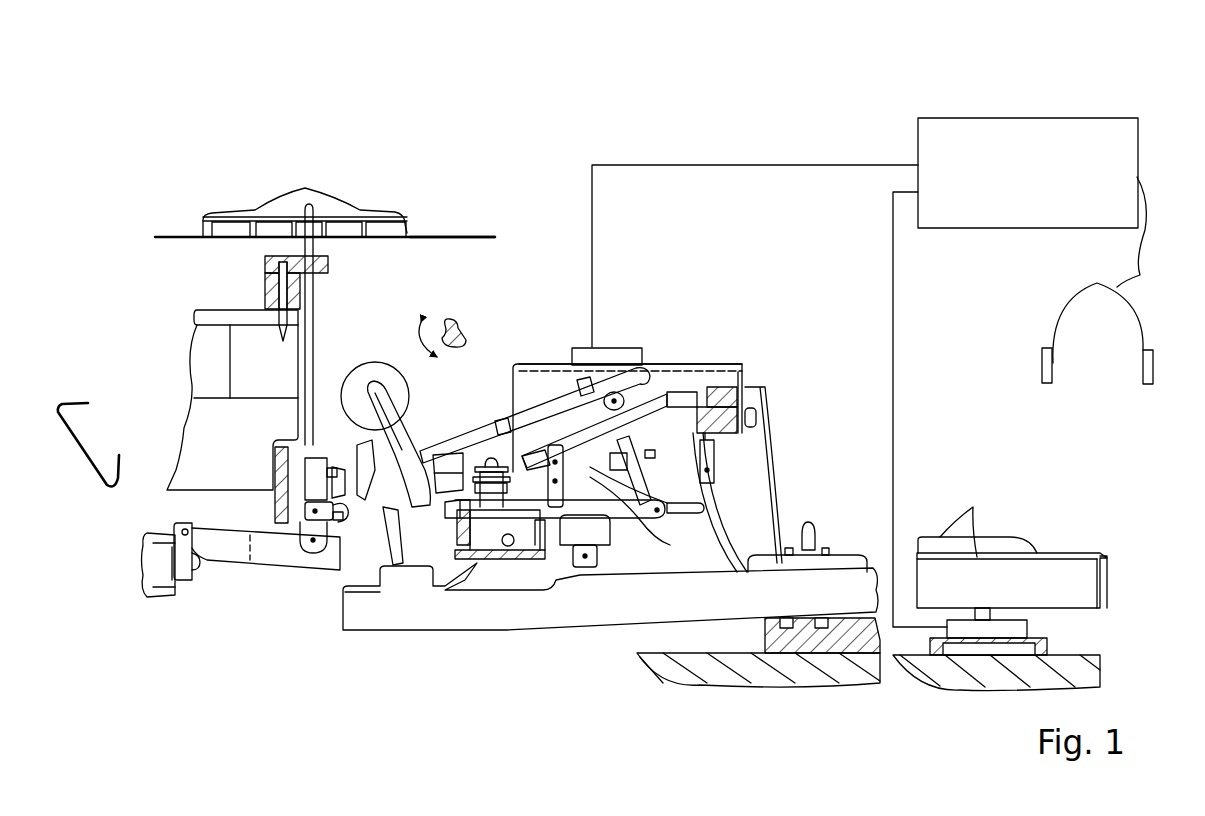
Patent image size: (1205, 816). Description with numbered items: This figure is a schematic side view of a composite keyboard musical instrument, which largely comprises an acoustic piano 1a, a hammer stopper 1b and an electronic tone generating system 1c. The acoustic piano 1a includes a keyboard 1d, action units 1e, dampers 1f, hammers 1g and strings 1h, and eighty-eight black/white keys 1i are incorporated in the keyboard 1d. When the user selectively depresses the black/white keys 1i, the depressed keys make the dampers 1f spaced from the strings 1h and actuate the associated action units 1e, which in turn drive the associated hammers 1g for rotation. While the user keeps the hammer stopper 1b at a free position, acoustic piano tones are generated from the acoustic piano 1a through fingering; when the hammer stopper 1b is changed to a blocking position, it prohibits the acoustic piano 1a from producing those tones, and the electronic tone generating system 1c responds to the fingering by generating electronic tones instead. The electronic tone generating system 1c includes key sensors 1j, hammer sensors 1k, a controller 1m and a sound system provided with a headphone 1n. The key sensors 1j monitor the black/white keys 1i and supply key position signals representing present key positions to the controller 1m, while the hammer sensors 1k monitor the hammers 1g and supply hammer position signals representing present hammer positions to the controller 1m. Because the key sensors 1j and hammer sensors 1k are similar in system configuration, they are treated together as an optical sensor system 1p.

The acoustic piano 1a is at (125, 207).
The hammer stopper 1b is at (448, 318).
The electronic tone generating system 1c is at (995, 100).
The keyboard 1d is at (1068, 550).
The action units 1e is at (688, 501).
The dampers 1f is at (257, 194).
The hammers 1g is at (372, 358).
The strings 1h is at (442, 235).
The black/white keys 1i is at (973, 508).
The key sensors 1j is at (1029, 649).
The hammer sensors 1k is at (618, 343).
The controller 1m is at (955, 229).
The headphone 1n is at (1040, 355).
The optical sensor system 1p is at (1048, 620).